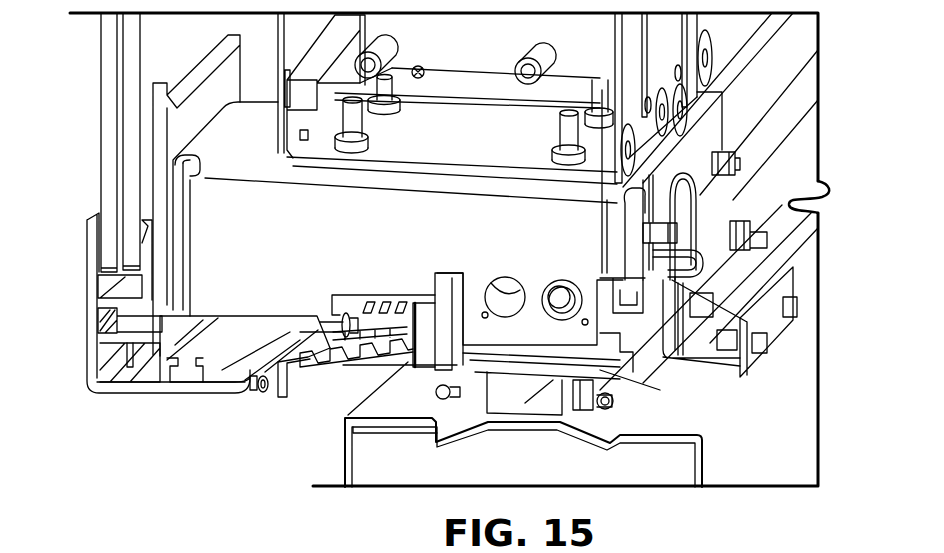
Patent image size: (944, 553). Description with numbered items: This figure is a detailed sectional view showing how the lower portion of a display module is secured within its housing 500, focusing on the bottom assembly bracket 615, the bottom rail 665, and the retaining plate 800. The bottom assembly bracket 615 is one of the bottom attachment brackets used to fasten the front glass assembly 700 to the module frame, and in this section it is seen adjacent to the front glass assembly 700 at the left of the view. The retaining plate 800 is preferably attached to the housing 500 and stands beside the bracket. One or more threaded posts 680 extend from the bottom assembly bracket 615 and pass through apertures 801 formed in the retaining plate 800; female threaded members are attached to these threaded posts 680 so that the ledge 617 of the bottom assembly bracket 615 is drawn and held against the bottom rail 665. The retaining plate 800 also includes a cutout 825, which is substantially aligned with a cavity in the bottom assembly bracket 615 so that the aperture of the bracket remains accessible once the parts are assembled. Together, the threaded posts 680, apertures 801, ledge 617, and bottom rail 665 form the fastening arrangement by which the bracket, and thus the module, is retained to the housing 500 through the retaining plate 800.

The housing 500 is at (570, 382).
The bottom assembly bracket 615 is at (262, 300).
The ledge 617 is at (443, 283).
The bottom rail 665 is at (448, 313).
The threaded posts 680 is at (742, 155).
The front glass assembly 700 is at (108, 340).
The retaining plate 800 is at (724, 97).
The apertures 801 is at (717, 143).
The cutout 825 is at (681, 219).